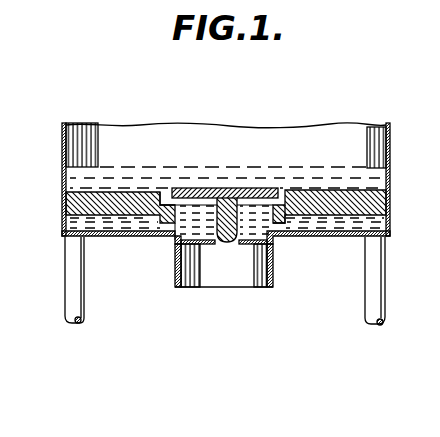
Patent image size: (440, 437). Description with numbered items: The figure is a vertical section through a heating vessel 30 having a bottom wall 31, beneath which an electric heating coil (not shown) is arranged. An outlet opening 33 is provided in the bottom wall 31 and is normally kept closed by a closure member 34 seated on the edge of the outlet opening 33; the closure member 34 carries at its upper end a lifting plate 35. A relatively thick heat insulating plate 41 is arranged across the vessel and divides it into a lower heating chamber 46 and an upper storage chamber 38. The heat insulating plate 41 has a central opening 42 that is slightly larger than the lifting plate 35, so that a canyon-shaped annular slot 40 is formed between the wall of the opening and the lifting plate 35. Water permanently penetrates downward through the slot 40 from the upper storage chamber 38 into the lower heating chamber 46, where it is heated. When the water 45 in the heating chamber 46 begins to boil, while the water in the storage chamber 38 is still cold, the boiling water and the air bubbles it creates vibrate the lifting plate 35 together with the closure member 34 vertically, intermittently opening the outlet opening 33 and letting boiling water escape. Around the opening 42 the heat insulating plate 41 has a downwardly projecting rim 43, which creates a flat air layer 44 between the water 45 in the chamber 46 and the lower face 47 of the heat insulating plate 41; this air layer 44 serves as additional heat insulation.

The heating vessel 30 is at (62, 157).
The bottom wall 31 is at (322, 240).
The outlet opening 33 is at (232, 243).
The closure member 34 is at (221, 243).
The lifting plate 35 is at (232, 190).
The upper storage chamber 38 is at (120, 133).
The annular slot 40 is at (163, 190).
The heat insulating plate 41 is at (72, 208).
The central opening 42 is at (200, 203).
The downwardly projecting rim 43 is at (288, 208).
The air layer 44 is at (348, 220).
The water 45 is at (155, 228).
The heating chamber 46 is at (310, 222).
The lower face 47 is at (124, 220).